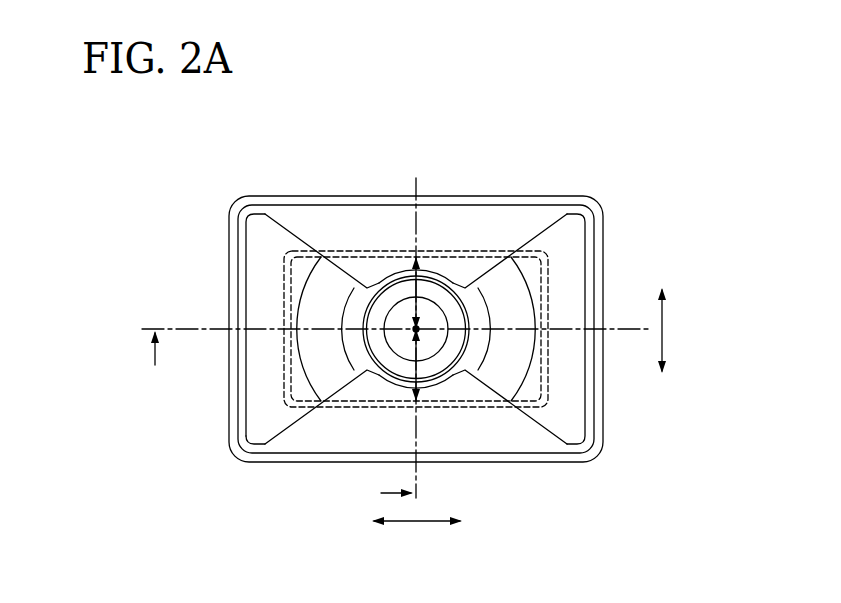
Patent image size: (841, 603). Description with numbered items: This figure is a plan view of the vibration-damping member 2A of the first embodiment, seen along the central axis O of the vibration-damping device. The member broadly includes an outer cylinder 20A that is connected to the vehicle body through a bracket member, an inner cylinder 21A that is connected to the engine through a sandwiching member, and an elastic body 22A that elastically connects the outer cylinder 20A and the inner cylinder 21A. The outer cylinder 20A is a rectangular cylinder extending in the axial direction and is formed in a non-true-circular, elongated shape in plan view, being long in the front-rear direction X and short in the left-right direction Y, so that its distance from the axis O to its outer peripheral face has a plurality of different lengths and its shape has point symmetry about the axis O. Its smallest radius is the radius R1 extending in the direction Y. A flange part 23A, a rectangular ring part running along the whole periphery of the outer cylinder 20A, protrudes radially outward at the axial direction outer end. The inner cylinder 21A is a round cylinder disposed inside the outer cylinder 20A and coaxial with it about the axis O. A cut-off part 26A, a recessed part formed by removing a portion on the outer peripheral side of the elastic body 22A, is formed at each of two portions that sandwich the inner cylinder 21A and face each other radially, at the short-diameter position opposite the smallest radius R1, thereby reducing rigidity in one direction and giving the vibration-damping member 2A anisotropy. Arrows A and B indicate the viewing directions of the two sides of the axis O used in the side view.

The vibration-damping member 2A is at (588, 184).
The flange part 23A is at (330, 232).
The cut-off part 26A is at (305, 231).
The outer cylinder 20A is at (343, 407).
The elastic body 22A is at (568, 406).
The inner cylinder 21A is at (445, 300).
The radius R1 is at (418, 288).
The central axis O is at (418, 333).
The arrow A is at (146, 354).
The arrow B is at (388, 494).
The X direction X is at (412, 521).
The Y direction Y is at (664, 330).